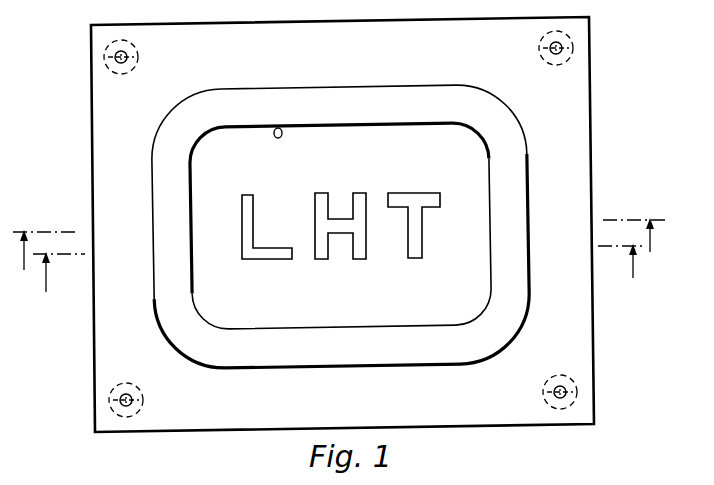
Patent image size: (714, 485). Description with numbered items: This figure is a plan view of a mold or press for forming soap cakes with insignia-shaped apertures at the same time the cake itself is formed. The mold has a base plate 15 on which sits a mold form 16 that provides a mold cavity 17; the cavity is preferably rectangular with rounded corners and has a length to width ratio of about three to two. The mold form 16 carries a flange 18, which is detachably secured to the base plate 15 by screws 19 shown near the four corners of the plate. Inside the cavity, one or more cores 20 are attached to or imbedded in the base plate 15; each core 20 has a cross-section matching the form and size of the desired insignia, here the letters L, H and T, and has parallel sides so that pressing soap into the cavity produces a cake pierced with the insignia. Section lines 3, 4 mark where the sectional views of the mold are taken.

The section line 3- 3 is at (336, 244).
The section line 4- 4 is at (338, 268).
The base plate 15 is at (203, 292).
The mold form 16 is at (394, 102).
The mold cavity 17 is at (277, 129).
The flange 18 is at (98, 127).
The screws 19 is at (106, 51).
The cores 20 is at (400, 197).